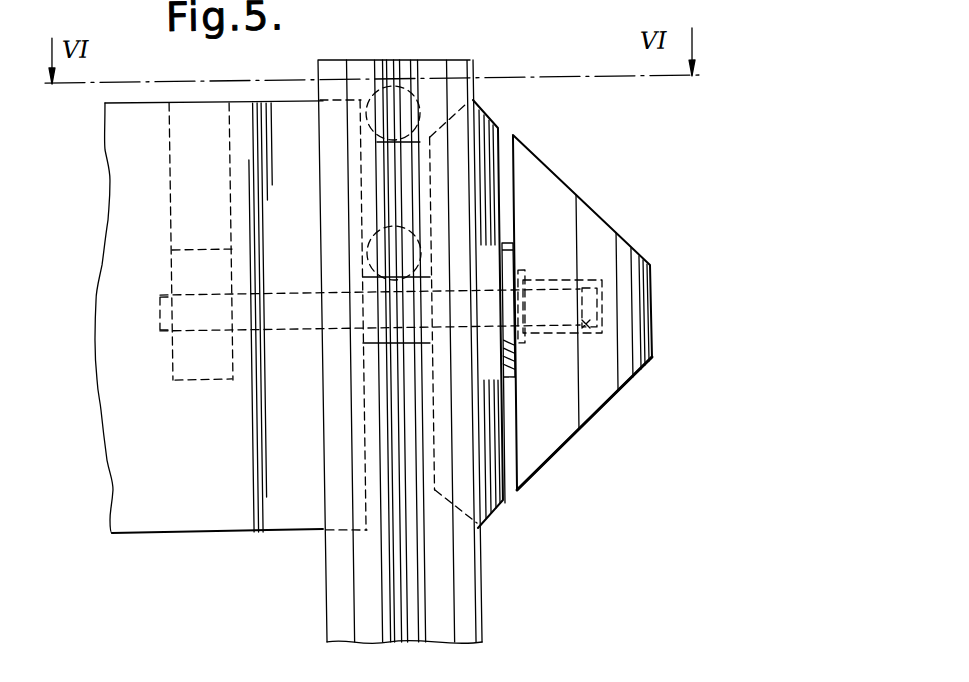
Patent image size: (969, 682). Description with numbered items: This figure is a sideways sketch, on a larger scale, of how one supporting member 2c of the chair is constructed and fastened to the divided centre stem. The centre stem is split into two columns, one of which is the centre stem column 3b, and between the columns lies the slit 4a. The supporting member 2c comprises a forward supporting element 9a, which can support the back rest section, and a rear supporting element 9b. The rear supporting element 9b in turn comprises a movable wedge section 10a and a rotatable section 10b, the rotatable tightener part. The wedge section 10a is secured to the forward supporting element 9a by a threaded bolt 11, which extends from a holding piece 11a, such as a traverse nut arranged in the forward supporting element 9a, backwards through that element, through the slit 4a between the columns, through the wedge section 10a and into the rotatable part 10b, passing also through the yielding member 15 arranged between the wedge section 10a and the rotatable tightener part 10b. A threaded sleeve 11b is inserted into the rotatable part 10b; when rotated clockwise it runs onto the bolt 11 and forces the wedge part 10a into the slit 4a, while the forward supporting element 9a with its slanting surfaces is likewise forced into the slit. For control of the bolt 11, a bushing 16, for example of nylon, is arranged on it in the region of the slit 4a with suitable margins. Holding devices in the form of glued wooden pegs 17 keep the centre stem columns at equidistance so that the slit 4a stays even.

The supporting member 2c is at (582, 188).
The centre stem column 3b is at (459, 611).
The slit 4a is at (389, 520).
The forward supporting element 9a is at (302, 501).
The rear supporting element 9b is at (550, 480).
The movable wedge section 10a is at (499, 499).
The rotatable section 10b is at (621, 388).
The threaded bolt 11 is at (307, 329).
The holding piece 11a is at (182, 379).
The threaded sleeve 11b is at (598, 283).
The yielding member 15 is at (512, 364).
The bushing 16 is at (380, 348).
The wooden pegs 17 is at (418, 68).